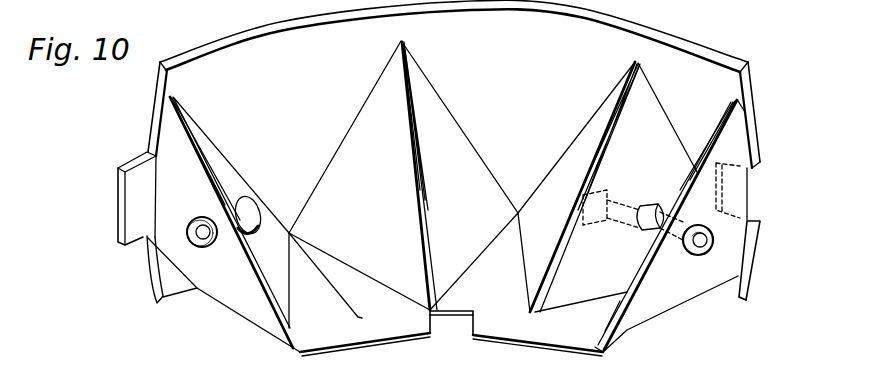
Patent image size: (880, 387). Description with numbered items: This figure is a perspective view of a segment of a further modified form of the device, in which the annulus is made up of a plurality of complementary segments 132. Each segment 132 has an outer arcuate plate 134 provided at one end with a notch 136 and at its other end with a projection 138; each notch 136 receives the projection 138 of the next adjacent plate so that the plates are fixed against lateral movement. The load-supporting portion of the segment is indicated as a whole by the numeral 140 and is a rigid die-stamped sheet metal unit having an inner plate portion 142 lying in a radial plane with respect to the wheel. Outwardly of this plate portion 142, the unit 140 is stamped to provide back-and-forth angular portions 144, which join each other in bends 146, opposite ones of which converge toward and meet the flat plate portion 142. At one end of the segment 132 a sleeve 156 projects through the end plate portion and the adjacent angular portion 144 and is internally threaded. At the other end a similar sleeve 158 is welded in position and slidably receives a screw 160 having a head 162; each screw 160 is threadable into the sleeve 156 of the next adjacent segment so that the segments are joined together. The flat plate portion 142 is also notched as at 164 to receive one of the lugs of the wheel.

The complementary segment 132 is at (722, 48).
The outer arcuate plate 134 is at (747, 78).
The notch 136 is at (753, 216).
The projection 138 is at (133, 213).
The load-supporting portion 140 is at (462, 157).
The inner plate portion 142 is at (520, 320).
The angular portions 144 is at (360, 136).
The bends 146 is at (420, 202).
The sleeve 156 is at (250, 213).
The sleeve 158 is at (653, 212).
The screw 160 is at (705, 260).
The head 162 is at (620, 195).
The notch 164 is at (470, 316).